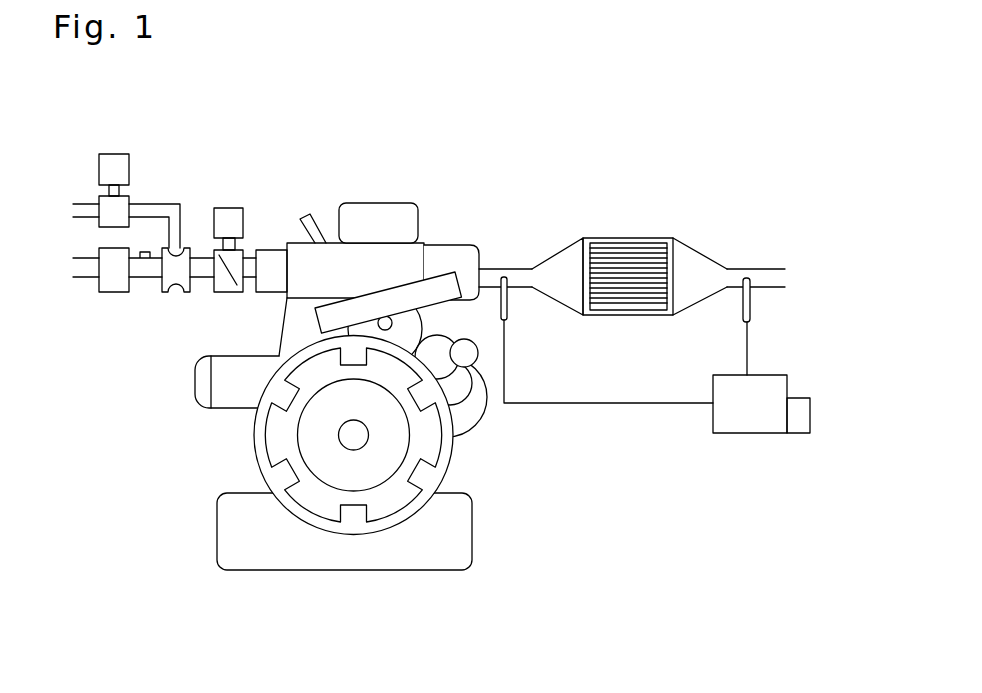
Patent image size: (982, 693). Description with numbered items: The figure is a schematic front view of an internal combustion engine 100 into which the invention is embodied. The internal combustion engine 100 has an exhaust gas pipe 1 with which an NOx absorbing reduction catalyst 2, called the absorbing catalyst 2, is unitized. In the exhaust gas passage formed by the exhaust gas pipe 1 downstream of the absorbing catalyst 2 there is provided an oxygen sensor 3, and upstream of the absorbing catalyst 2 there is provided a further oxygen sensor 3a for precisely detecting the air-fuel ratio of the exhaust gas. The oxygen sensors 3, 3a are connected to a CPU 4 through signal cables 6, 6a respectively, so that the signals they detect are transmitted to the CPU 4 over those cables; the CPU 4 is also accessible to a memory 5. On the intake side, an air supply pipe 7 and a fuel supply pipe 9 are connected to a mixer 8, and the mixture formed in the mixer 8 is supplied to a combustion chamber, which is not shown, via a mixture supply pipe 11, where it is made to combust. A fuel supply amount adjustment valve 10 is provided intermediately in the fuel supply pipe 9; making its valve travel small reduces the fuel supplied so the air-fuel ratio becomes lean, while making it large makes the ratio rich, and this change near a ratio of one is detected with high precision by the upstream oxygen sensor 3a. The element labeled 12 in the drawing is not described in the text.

The internal combustion engine 100 is at (317, 135).
The exhaust gas pipe 1 is at (500, 267).
The NOx absorbing reduction catalyst 2 is at (635, 250).
The oxygen sensor 3 is at (751, 305).
The oxygen sensor 3a is at (508, 310).
The CPU 4 is at (760, 425).
The memory 5 is at (797, 433).
The signal cable 6 is at (748, 350).
The signal cable 6a is at (608, 403).
The air supply pipe 7 is at (142, 279).
The mixer 8 is at (176, 293).
The fuel supply pipe 9 is at (157, 204).
The fuel supply amount adjustment valve 10 is at (112, 154).
The mixture supply pipe 11 is at (202, 258).
The intake passage 12 is at (243, 249).